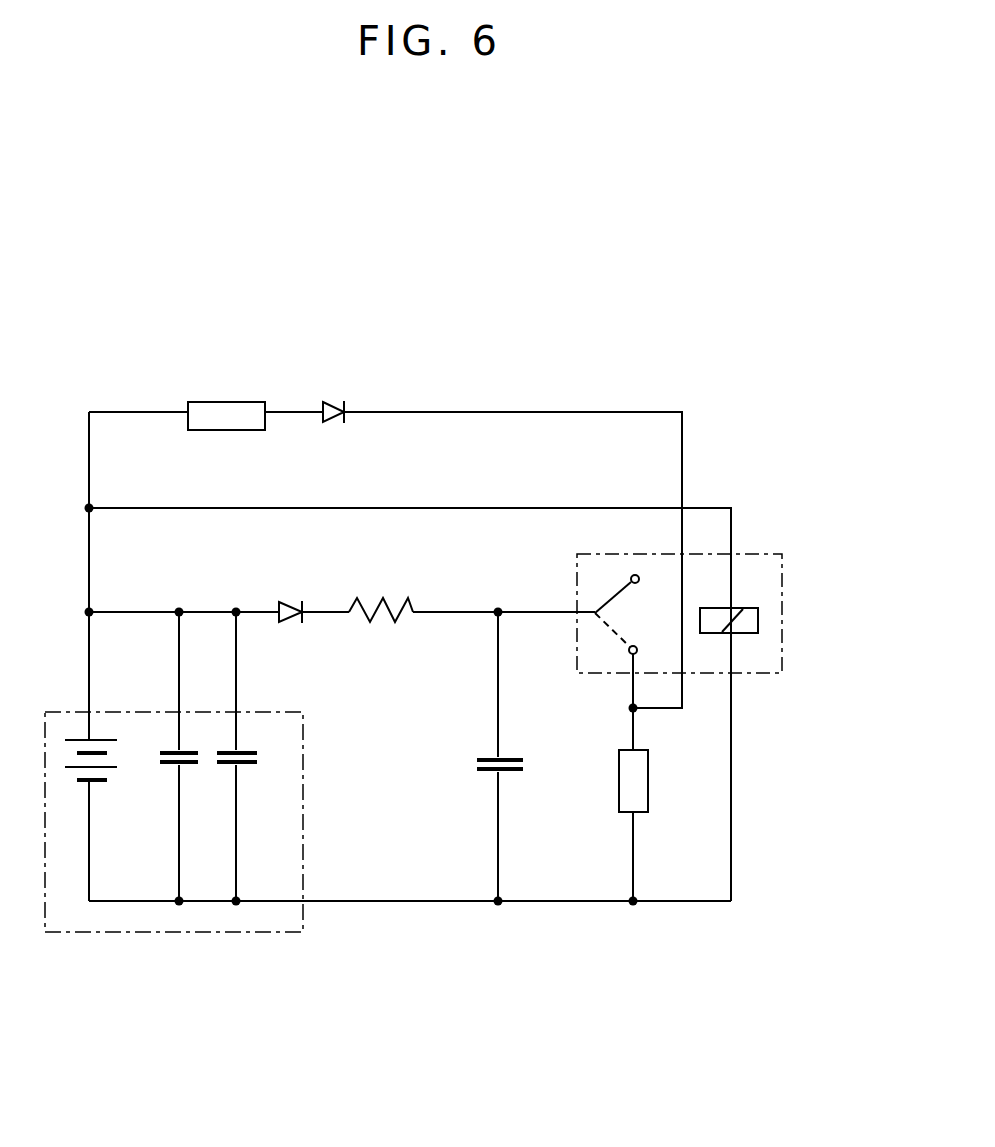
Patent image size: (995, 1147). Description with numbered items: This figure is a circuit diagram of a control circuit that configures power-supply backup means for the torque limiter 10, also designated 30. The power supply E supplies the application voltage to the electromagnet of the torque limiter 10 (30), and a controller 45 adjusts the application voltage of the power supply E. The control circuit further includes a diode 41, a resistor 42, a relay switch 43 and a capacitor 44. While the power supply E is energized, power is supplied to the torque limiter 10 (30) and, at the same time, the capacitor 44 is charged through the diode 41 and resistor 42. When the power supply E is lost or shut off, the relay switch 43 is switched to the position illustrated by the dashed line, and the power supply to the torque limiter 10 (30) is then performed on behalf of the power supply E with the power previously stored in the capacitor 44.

The controller 45 is at (238, 401).
The diode 41 is at (333, 402).
The resistor 42 is at (385, 599).
The relay switch 43 is at (783, 630).
The capacitor 44 is at (486, 758).
The torque limiter 10 is at (648, 796).
The torque limiter 30 is at (752, 804).
The power supply E is at (304, 824).